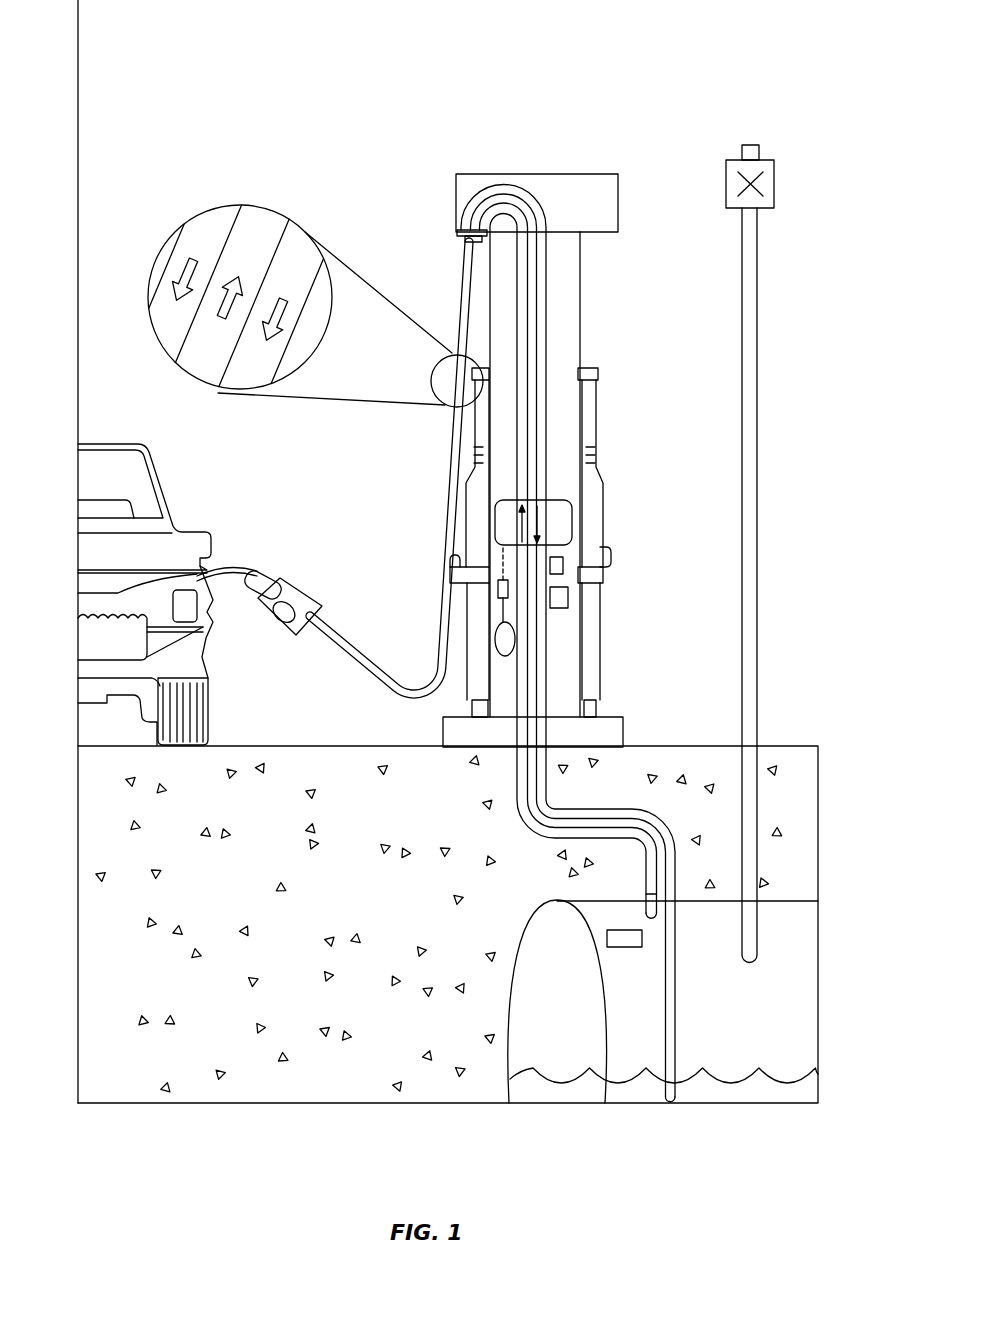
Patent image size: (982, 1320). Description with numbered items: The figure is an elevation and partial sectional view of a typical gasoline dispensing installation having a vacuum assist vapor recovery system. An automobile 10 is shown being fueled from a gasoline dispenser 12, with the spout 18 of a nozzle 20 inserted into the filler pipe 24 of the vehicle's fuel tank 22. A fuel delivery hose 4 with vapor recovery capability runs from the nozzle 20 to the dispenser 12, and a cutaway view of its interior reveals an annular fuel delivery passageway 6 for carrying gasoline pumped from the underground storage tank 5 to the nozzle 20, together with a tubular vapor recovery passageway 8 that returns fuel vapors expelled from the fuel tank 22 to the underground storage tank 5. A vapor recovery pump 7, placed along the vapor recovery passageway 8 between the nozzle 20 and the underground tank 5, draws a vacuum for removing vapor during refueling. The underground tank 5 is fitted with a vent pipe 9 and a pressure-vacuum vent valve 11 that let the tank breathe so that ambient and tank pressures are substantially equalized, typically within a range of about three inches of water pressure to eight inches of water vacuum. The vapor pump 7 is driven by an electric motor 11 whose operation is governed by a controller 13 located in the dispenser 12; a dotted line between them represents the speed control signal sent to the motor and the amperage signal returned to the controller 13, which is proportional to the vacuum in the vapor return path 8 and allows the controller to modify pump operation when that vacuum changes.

The fuel delivery hose 4 is at (167, 250).
The underground storage tank 5 is at (738, 1017).
The annular fuel delivery passageway 6 is at (217, 225).
The vapor recovery pump 7 is at (496, 637).
The tubular vapor recovery passageway 8 is at (207, 330).
The vent pipe 9 is at (758, 338).
The automobile 10 is at (134, 488).
The pressure-vacuum vent valve 11 is at (498, 578).
The gasoline dispenser 12 is at (628, 343).
The controller 13 is at (560, 500).
The spout 18 is at (238, 572).
The nozzle 20 is at (278, 578).
The fuel tank 22 is at (128, 654).
The filler pipe 24 is at (155, 600).